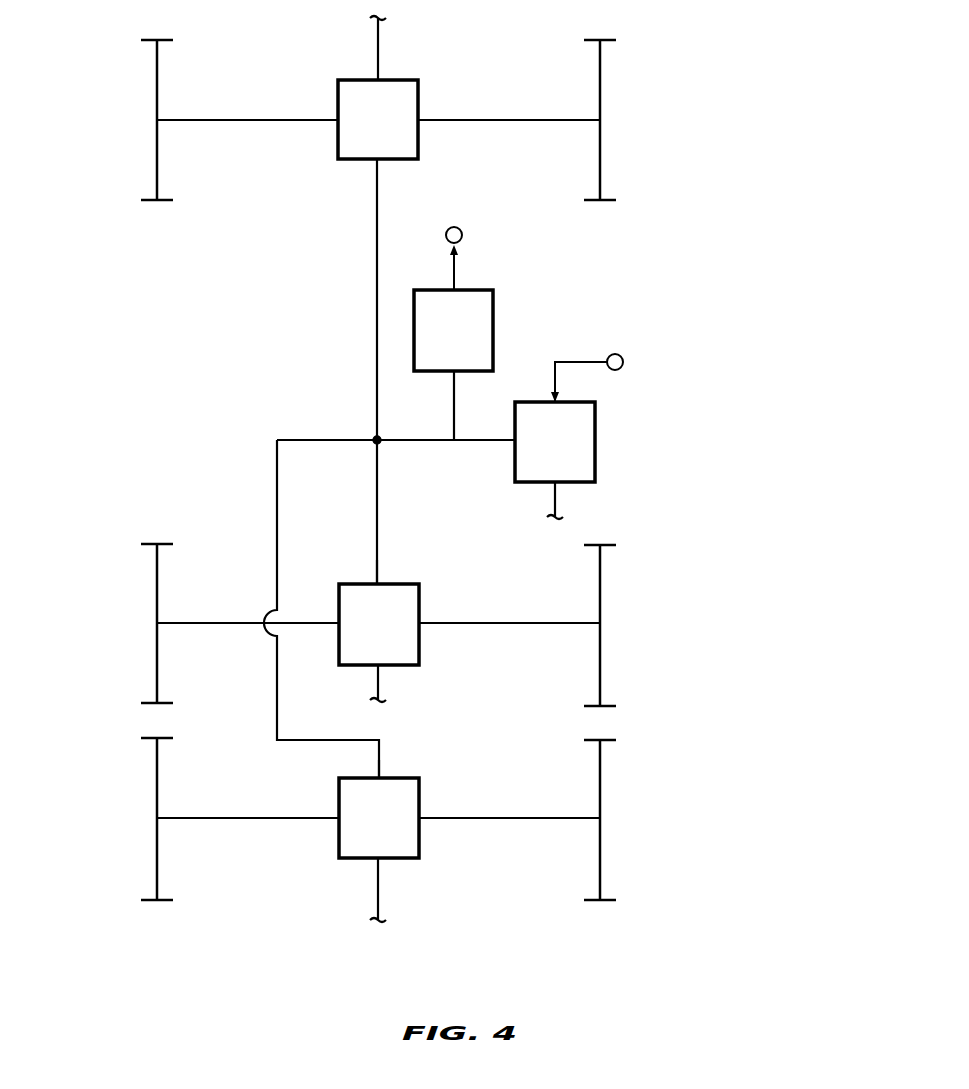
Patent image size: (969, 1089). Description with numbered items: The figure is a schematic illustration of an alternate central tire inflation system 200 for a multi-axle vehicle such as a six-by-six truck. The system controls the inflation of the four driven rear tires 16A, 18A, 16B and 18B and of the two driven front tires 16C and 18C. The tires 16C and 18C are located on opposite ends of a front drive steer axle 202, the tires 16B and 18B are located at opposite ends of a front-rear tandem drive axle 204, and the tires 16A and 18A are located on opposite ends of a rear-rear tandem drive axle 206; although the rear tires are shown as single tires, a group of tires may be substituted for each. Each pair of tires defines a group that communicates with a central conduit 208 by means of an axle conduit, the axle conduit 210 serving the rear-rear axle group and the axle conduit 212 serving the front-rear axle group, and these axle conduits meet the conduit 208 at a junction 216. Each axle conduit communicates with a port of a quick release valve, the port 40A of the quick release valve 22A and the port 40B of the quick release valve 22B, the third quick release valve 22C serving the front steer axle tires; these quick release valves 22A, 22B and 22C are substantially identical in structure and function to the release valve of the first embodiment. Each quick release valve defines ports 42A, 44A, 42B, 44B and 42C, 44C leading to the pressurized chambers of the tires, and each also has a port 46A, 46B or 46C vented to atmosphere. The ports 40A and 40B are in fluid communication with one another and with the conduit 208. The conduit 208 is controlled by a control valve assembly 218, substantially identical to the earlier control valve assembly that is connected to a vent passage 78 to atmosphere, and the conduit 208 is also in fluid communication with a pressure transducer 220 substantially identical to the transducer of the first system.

The central tire inflation system 200 is at (735, 121).
The front drive steer axle 202 is at (683, 80).
The front-rear tandem drive axle 204 is at (683, 600).
The rear-rear tandem drive axle 206 is at (683, 793).
The central conduit 208 is at (408, 442).
The axle conduit 210 is at (277, 665).
The axle conduit 212 is at (378, 515).
The junction 216 is at (377, 440).
The control valve assembly 218 is at (577, 430).
The pressure transducer 220 is at (475, 312).
The vent passage 78 is at (558, 508).
The driven rear tire 16A is at (600, 790).
The driven rear tire 16B is at (600, 596).
The driven front tire 16C is at (600, 75).
The driven rear tire 18A is at (157, 777).
The driven rear tire 18B is at (157, 582).
The driven front tire 18C is at (157, 87).
The quick release valve 22A is at (355, 842).
The quick release valve 22B is at (405, 607).
The quick release valve 22C is at (397, 98).
The port 40A is at (382, 778).
The port 40B is at (380, 583).
The port 42A is at (419, 821).
The port 42B is at (419, 626).
The port 42C is at (419, 124).
The port 44A is at (338, 823).
The port 44B is at (338, 622).
The port 44C is at (335, 123).
The port 46A is at (380, 860).
The port 46B is at (380, 666).
The port 46C is at (372, 78).